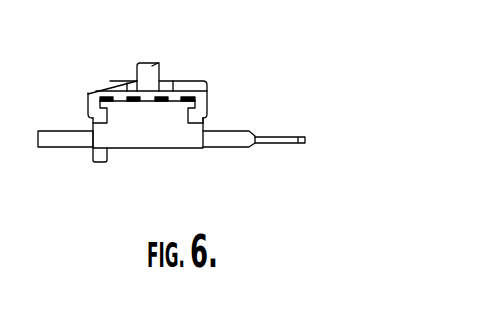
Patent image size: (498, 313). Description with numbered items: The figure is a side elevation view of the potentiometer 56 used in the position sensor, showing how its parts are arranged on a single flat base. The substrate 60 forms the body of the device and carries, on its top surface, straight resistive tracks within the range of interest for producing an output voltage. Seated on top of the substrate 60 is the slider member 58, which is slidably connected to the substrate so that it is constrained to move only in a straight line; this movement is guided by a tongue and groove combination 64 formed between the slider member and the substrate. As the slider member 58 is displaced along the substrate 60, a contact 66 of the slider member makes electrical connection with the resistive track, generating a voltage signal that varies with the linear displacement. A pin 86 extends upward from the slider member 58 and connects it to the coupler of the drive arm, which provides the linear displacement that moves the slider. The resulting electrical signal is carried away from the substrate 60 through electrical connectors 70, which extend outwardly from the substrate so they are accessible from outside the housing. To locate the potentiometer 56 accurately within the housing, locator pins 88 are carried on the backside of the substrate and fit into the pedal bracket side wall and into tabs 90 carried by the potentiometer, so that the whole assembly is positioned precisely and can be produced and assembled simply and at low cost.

The potentiometer 56 is at (289, 72).
The slider member 58 is at (88, 92).
The substrate 60 is at (152, 132).
The tongue and groove combination 64 is at (204, 111).
The contact 66 is at (147, 102).
The electrical connectors 70 is at (280, 145).
The pin 86 is at (150, 70).
The locator pins 88 is at (100, 152).
The tabs 90 is at (55, 141).